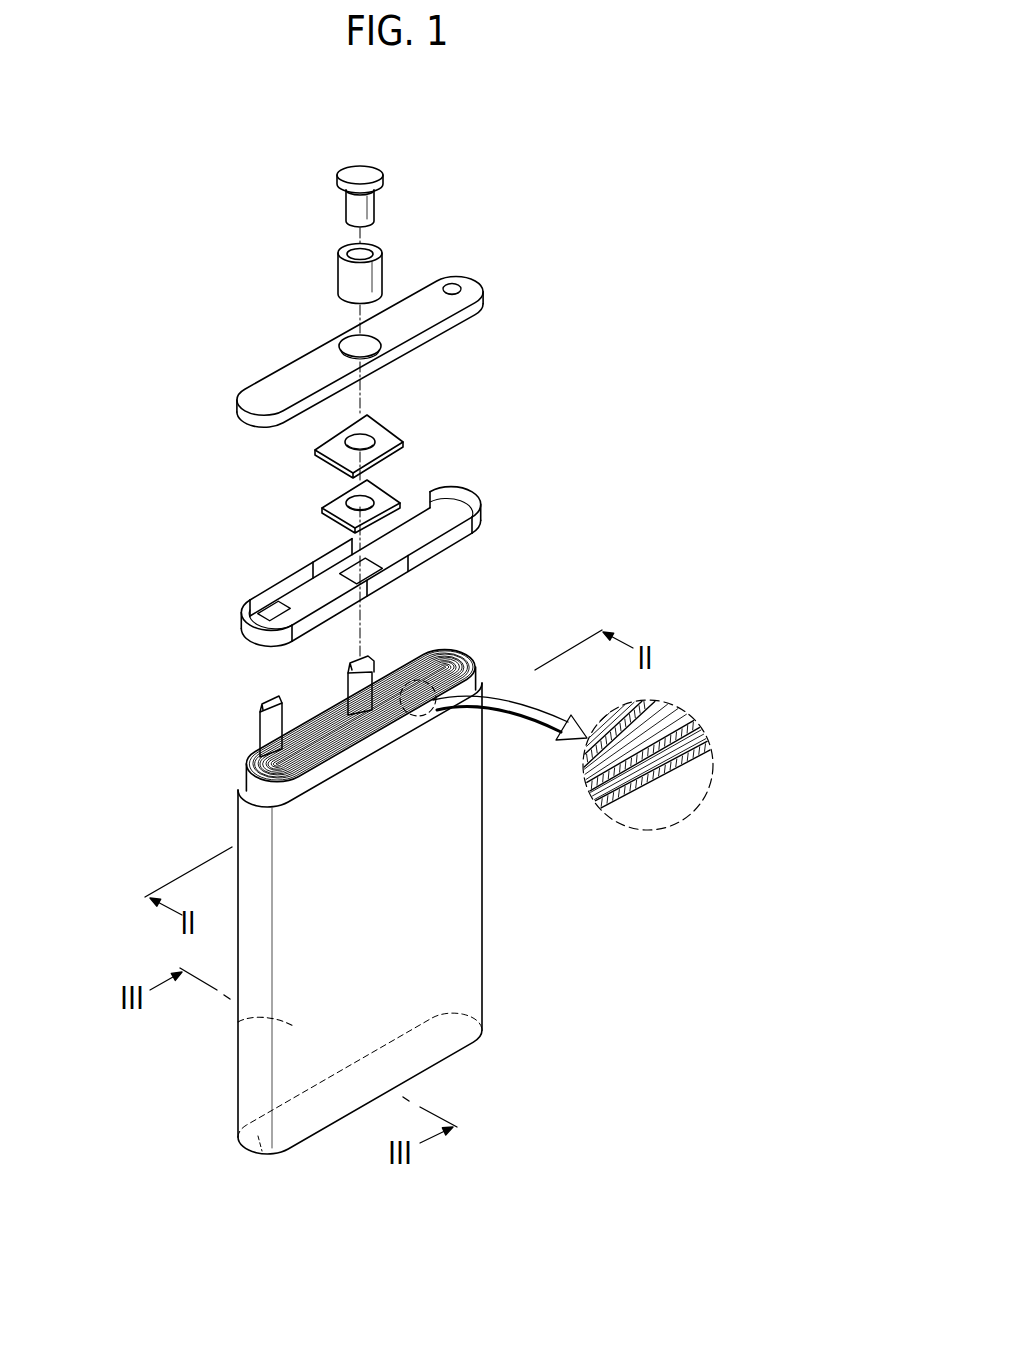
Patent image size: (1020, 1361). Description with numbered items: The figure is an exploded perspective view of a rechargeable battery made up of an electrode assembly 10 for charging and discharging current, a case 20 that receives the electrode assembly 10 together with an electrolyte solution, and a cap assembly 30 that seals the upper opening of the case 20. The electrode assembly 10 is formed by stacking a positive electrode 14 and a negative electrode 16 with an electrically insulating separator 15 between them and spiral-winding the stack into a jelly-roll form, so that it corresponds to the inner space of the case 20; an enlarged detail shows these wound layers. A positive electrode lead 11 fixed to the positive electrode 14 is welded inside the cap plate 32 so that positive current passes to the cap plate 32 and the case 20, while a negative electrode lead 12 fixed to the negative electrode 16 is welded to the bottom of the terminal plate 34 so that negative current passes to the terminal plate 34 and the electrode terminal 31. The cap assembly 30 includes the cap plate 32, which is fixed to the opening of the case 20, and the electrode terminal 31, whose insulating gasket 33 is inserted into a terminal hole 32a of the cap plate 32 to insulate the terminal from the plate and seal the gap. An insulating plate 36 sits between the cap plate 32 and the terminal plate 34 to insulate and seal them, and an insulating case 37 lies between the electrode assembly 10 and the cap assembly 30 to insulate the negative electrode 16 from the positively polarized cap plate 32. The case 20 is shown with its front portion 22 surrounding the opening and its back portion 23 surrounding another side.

The electrode assembly 10 is at (472, 642).
The positive electrode lead 11 is at (270, 702).
The negative electrode lead 12 is at (368, 660).
The positive electrode 14 is at (683, 718).
The separator 15 is at (585, 797).
The negative electrode 16 is at (702, 738).
The case 20 is at (358, 929).
The front portion 22 is at (238, 1022).
The back portion 23 is at (258, 1153).
The cap assembly 30 is at (492, 405).
The electrode terminal 31 is at (370, 168).
The cap plate 32 is at (340, 351).
The terminal hole 32a is at (343, 340).
The insulating gasket 33 is at (348, 278).
The terminal plate 34 is at (380, 498).
The insulating plate 36 is at (383, 433).
The insulating case 37 is at (458, 513).